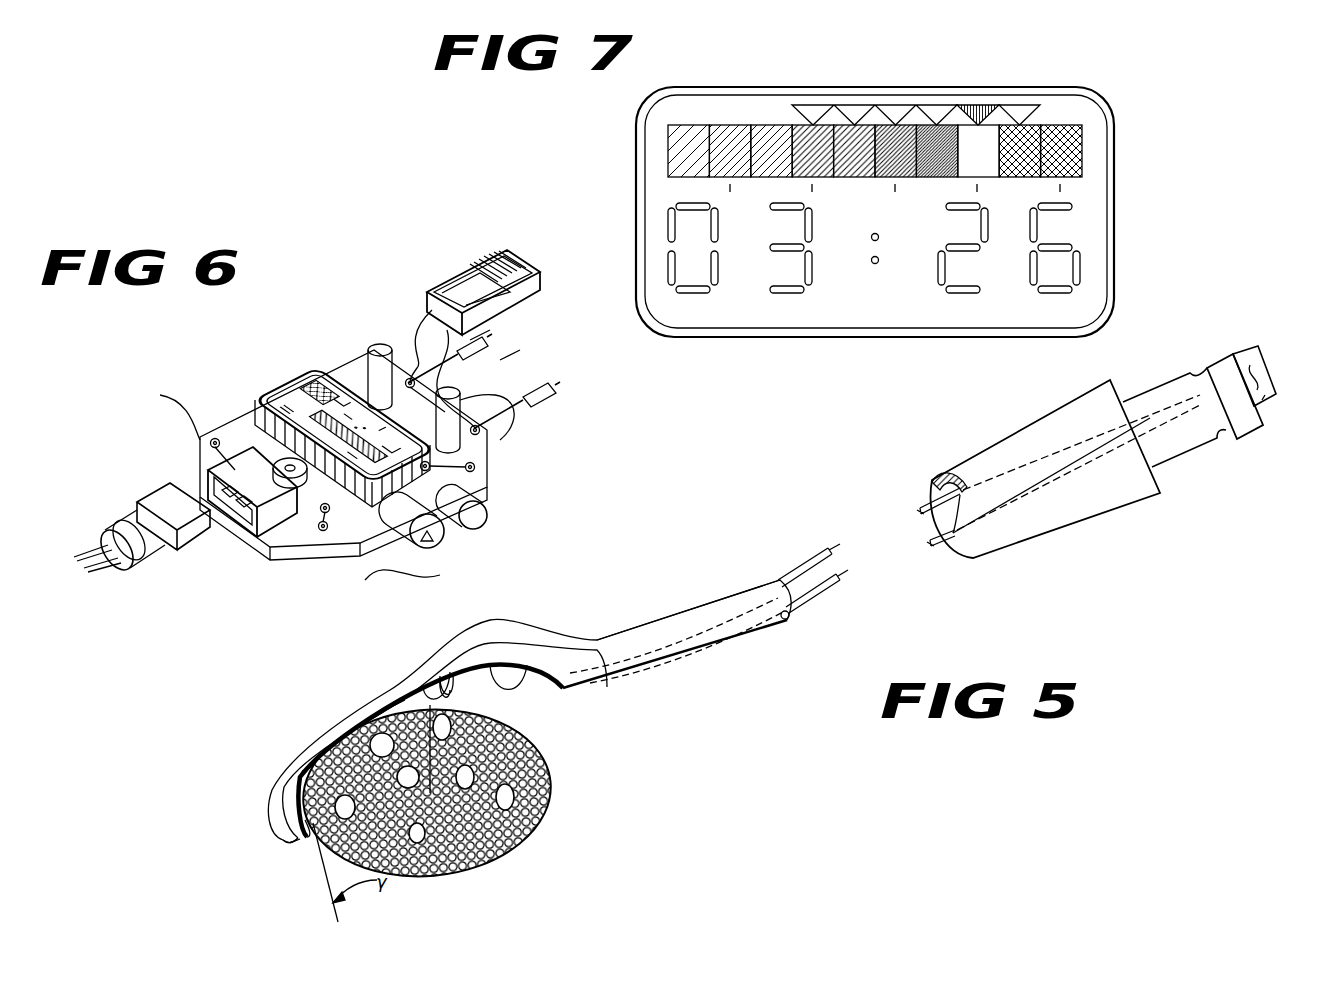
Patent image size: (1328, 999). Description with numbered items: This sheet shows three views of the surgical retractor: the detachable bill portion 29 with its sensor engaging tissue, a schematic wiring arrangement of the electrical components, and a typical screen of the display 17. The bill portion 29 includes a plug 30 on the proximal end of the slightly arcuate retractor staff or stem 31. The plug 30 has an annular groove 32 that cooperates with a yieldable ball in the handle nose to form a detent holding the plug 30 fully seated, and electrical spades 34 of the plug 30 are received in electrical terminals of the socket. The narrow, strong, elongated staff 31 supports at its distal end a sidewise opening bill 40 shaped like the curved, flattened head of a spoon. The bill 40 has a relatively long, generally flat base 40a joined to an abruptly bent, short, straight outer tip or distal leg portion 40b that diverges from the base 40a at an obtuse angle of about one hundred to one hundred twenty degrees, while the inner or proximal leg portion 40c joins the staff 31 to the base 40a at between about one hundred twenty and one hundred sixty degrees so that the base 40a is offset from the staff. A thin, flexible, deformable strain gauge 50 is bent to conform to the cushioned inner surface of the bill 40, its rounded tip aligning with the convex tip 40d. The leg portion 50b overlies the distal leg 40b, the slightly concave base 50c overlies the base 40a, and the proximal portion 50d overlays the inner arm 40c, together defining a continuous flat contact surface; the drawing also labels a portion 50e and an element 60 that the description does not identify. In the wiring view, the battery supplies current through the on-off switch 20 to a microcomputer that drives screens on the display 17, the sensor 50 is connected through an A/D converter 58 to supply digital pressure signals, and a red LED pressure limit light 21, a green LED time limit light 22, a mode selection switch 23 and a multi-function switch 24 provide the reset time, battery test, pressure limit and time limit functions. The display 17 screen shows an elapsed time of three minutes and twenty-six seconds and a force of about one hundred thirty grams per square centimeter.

In FIG. 7, the LCD display 17 is at (640, 167).
In FIG. 6, the LCD display 17 is at (287, 372).
In FIG. 6, the on-off switch 20 is at (440, 283).
In FIG. 6, the red LED pressure limit light 21 is at (378, 340).
In FIG. 6, the green LED time limit light 22 is at (478, 404).
In FIG. 6, the mode selection switch 23 is at (405, 566).
In FIG. 6, the multi-function switch 24 is at (490, 518).
In FIG. 5, the bill portion 29 is at (930, 471).
In FIG. 5, the plug 30 is at (1165, 458).
In FIG. 5, the retractor staff or stem 31 is at (735, 612).
In FIG. 5, the annular groove 32 is at (1192, 372).
In FIG. 6, the electrical spades 34 is at (142, 486).
In FIG. 5, the electrical spades 34 is at (1262, 356).
In FIG. 5, the bill 40 is at (371, 692).
In FIG. 5, the base 40a is at (405, 662).
In FIG. 5, the outer tip or distal leg portion 40b is at (285, 818).
In FIG. 5, the inner or proximal leg portion 40c is at (622, 603).
In FIG. 5, the convex tip 40d is at (300, 838).
In FIG. 5, the strain gauge 50 is at (546, 688).
In FIG. 5, the leg portion 50b is at (272, 812).
In FIG. 5, the base 50c is at (300, 772).
In FIG. 5, the proximal portion 50d is at (450, 672).
In FIG. 5, the sensor lead loop 50e is at (490, 665).
In FIG. 6, the A/D converter 58 is at (230, 446).
In FIG. 5, the sensor pad 60 is at (520, 840).